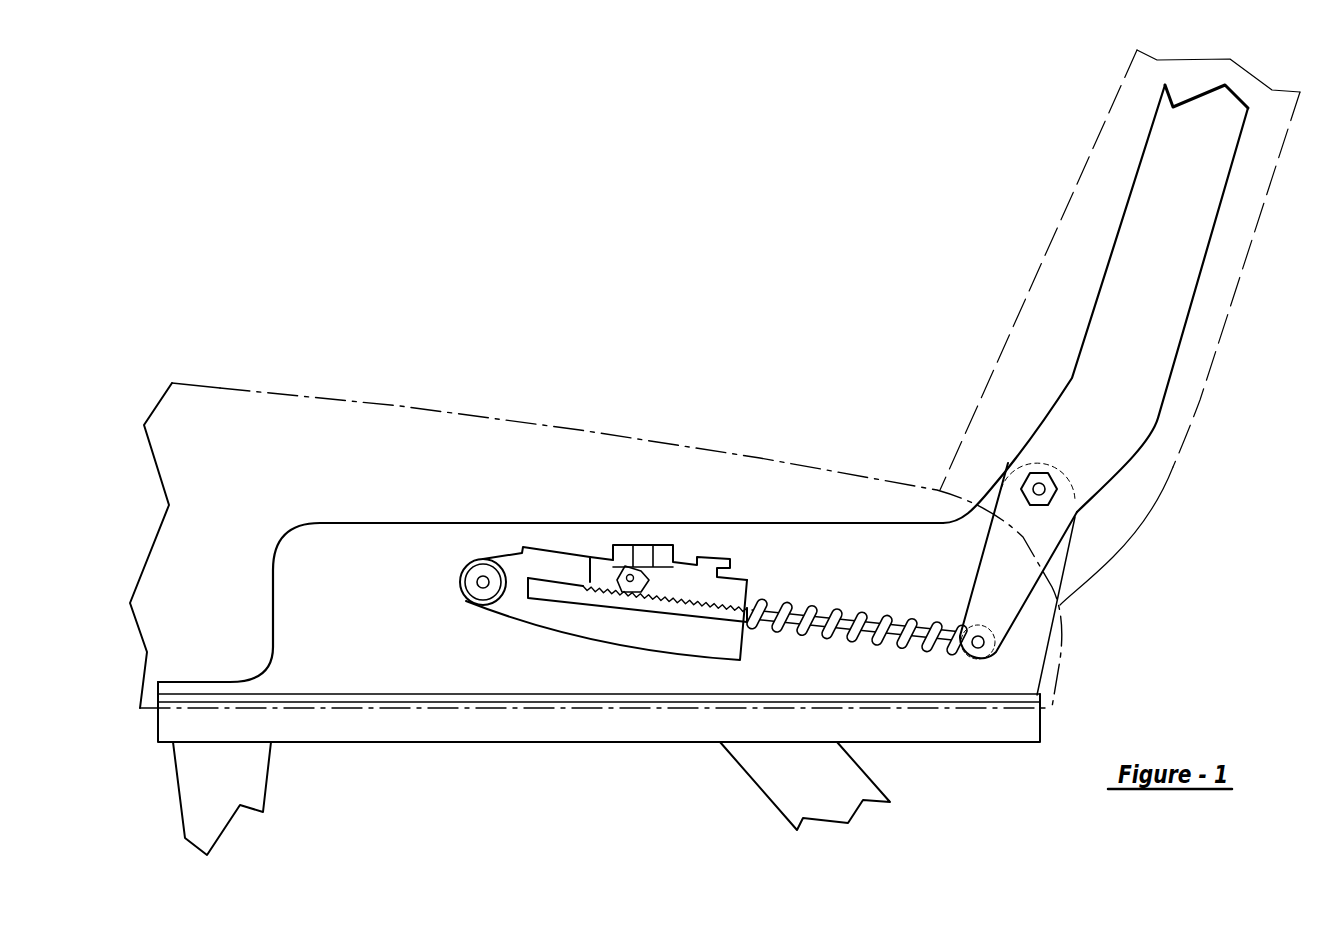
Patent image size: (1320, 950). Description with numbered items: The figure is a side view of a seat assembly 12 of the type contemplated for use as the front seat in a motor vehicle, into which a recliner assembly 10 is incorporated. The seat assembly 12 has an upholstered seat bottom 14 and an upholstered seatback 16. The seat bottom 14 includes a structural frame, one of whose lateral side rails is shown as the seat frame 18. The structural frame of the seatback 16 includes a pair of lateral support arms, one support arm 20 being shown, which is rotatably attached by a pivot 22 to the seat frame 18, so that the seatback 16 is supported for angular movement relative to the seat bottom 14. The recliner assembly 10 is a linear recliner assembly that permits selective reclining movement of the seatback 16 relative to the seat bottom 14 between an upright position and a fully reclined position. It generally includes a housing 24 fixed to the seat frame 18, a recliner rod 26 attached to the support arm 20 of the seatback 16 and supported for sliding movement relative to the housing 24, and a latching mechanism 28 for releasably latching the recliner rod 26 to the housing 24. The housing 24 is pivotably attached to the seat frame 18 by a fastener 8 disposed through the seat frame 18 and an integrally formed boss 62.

The fastener 8 is at (486, 572).
The recliner assembly 10 is at (588, 668).
The seat assembly 12 is at (712, 297).
The seat bottom 14 is at (243, 397).
The seatback 16 is at (1173, 162).
The seat frame 18 is at (422, 553).
The support arm 20 is at (1013, 582).
The pivot 22 is at (1039, 489).
The housing 24 is at (692, 632).
The recliner rod 26 is at (890, 645).
The latching mechanism 28 is at (630, 562).
The boss 62 is at (476, 592).